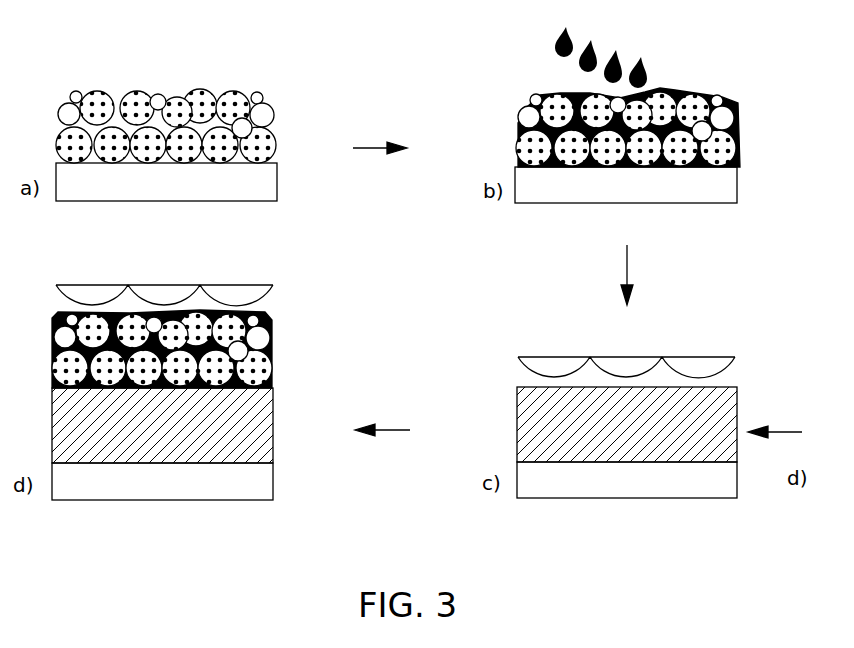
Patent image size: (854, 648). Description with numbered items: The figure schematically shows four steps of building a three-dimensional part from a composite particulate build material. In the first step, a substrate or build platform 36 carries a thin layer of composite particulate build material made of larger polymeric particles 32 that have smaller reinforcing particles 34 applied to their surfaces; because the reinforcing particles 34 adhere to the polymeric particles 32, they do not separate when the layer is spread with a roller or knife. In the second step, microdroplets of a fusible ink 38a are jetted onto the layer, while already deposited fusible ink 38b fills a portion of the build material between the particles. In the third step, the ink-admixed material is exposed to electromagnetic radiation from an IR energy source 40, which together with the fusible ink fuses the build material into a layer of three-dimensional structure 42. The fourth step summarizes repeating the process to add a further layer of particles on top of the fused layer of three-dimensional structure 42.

The polymeric particles 32 is at (98, 97).
The reinforcing particles 34 is at (160, 102).
The substrate or build platform 36 is at (178, 193).
The microdroplets of fusible ink 38a is at (553, 42).
The deposited fusible ink 38b is at (678, 93).
The IR energy source 40 is at (683, 368).
The layer of 3D structure 42 is at (543, 410).